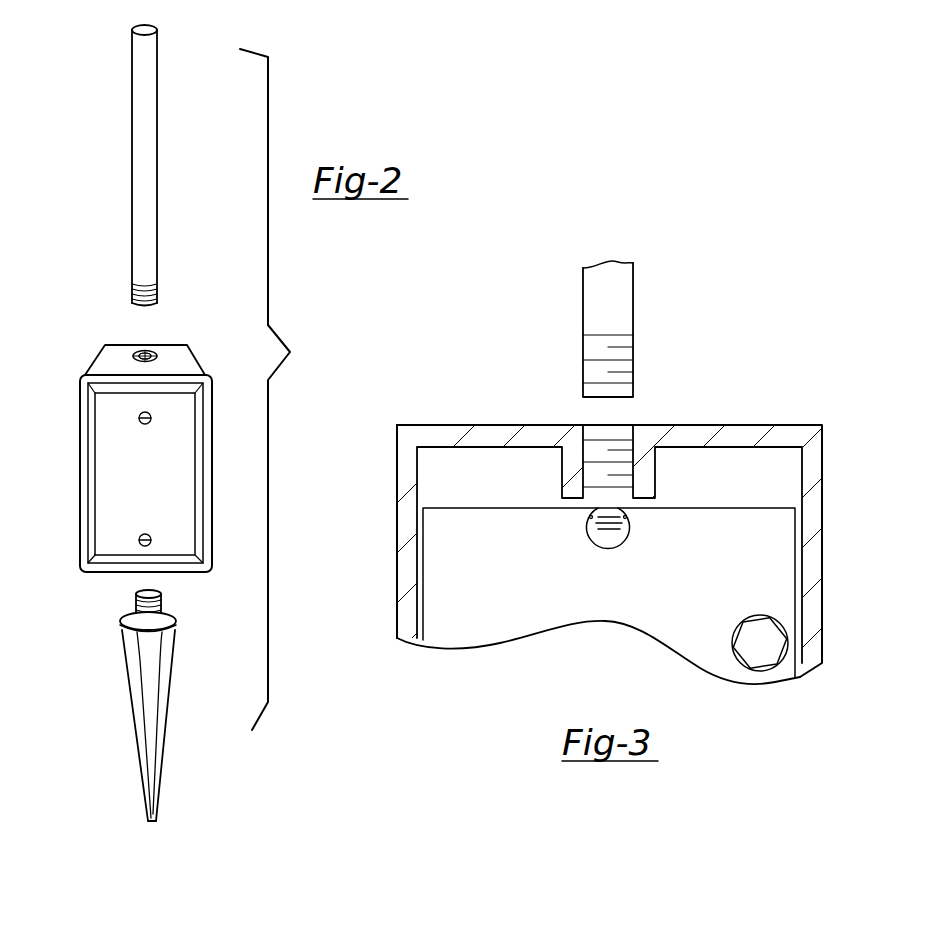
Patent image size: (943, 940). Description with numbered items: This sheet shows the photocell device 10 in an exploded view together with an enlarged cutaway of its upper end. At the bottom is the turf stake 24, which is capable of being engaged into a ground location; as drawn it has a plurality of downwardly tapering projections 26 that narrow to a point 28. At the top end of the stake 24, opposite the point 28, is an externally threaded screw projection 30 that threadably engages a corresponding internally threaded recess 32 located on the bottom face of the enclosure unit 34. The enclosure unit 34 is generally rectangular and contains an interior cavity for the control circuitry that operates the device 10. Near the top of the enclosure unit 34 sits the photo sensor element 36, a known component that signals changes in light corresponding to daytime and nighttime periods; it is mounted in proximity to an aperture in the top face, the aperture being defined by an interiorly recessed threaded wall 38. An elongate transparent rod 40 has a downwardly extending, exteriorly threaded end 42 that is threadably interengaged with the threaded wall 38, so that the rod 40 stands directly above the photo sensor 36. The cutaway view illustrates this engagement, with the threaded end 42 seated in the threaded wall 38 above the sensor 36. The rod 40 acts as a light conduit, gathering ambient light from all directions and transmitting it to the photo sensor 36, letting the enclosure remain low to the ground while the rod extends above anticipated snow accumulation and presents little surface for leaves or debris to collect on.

In FIG. 2, the photocell device 10 is at (282, 389).
In FIG. 2, the turf stake 24 is at (133, 714).
In FIG. 2, the tapering projections 26 is at (158, 768).
In FIG. 2, the point 28 is at (154, 821).
In FIG. 2, the externally threaded screw projection 30 is at (135, 605).
In FIG. 2, the internally threaded recess 32 is at (107, 567).
In FIG. 2, the enclosure unit 34 is at (66, 456).
In FIG. 3, the enclosure unit 34 is at (370, 511).
In FIG. 2, the photo sensor element 36 is at (142, 352).
In FIG. 3, the photo sensor element 36 is at (607, 531).
In FIG. 2, the interiorly recessed threaded wall 38 is at (150, 352).
In FIG. 3, the interiorly recessed threaded wall 38 is at (630, 470).
In FIG. 2, the transparent rod 40 is at (132, 157).
In FIG. 3, the transparent rod 40 is at (583, 298).
In FIG. 2, the exteriorly threaded end 42 is at (132, 290).
In FIG. 3, the exteriorly threaded end 42 is at (583, 373).